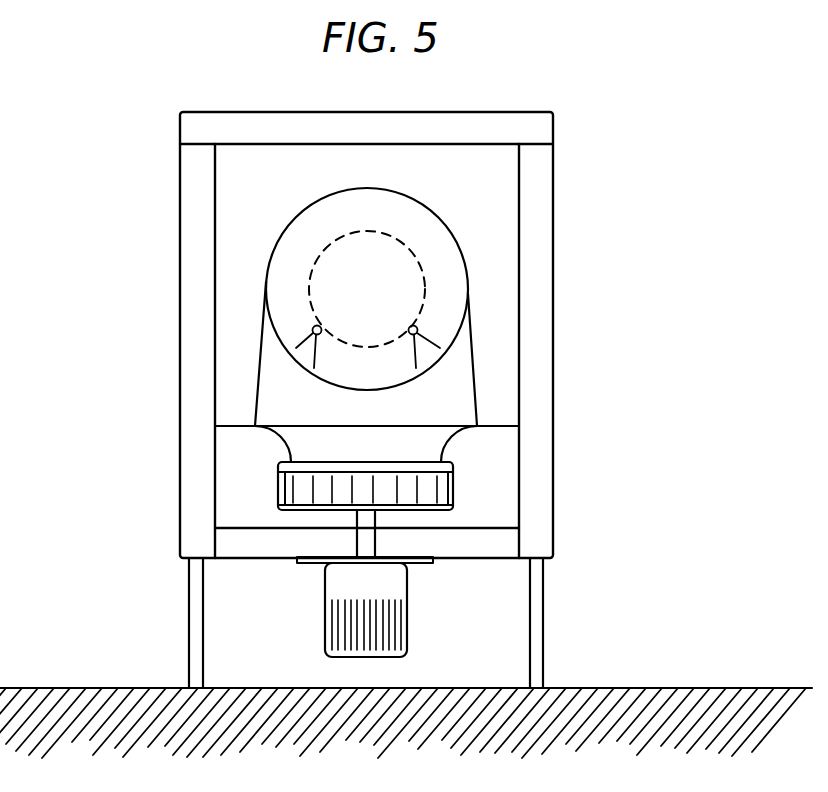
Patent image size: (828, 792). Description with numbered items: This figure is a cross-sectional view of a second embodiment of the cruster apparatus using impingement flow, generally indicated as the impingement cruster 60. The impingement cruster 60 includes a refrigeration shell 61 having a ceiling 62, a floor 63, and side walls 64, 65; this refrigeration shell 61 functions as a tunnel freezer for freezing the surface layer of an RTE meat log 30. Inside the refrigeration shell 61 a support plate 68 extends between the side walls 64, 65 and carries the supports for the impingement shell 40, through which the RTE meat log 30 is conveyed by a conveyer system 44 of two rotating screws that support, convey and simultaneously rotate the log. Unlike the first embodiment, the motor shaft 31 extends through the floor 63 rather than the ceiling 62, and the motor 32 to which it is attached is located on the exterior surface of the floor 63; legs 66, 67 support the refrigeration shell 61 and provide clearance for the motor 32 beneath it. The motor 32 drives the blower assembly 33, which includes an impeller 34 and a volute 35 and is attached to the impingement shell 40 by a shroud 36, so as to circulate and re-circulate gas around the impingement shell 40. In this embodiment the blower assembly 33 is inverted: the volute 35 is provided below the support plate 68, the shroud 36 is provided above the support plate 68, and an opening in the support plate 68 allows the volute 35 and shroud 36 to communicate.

The impingement cruster 60 is at (138, 47).
The refrigeration shell 61 is at (568, 140).
The ceiling 62 is at (226, 112).
The floor 63 is at (500, 537).
The side wall 64 is at (200, 297).
The side wall 65 is at (540, 270).
The leg 66 is at (192, 633).
The leg 67 is at (537, 623).
The support plate 68 is at (504, 426).
The impingement shell 40 is at (462, 222).
The RTE meat log 30 is at (318, 238).
The conveyer system 44 is at (282, 353).
The shroud 36 is at (287, 404).
The volute 35 is at (434, 440).
The blower assembly 33 is at (258, 452).
The impeller 34 is at (300, 482).
The motor shaft 31 is at (368, 539).
The motor 32 is at (398, 584).